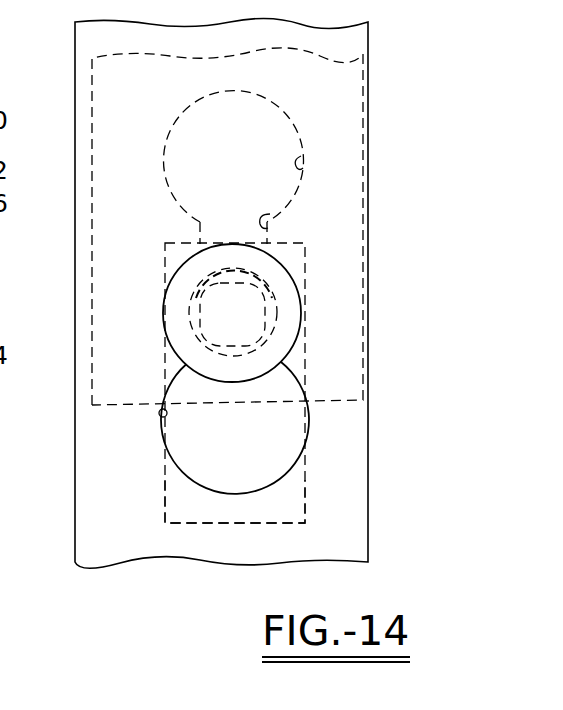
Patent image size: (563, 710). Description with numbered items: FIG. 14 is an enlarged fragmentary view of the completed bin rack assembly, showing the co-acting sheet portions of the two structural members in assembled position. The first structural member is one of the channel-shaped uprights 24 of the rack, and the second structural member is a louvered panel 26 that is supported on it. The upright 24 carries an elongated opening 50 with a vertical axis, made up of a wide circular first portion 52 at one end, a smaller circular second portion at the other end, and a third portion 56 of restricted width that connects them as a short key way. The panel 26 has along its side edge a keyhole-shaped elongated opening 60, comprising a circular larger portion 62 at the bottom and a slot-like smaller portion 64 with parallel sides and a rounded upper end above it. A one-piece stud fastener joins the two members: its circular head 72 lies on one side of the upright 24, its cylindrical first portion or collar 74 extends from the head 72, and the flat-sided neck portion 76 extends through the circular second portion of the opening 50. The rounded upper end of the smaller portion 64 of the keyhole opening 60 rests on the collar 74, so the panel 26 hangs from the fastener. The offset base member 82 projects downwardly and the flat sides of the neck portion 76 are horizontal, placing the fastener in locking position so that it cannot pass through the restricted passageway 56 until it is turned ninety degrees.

The channel-shaped upright 24 is at (92, 72).
The louvered panel 26 is at (77, 562).
The elongated opening 50 is at (285, 126).
The first portion 52 is at (303, 152).
The third portion 56 is at (272, 212).
The elongated opening 60 is at (172, 468).
The larger portion 62 is at (159, 413).
The smaller portion 64 is at (192, 287).
The head 72 is at (290, 283).
The first portion 74 is at (278, 352).
The neck portion 76 is at (276, 302).
The base member 82 is at (306, 480).